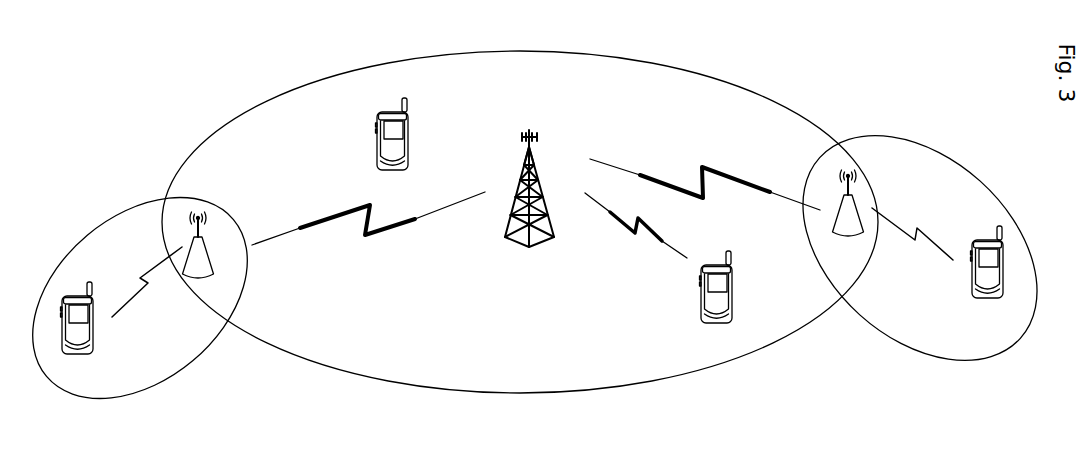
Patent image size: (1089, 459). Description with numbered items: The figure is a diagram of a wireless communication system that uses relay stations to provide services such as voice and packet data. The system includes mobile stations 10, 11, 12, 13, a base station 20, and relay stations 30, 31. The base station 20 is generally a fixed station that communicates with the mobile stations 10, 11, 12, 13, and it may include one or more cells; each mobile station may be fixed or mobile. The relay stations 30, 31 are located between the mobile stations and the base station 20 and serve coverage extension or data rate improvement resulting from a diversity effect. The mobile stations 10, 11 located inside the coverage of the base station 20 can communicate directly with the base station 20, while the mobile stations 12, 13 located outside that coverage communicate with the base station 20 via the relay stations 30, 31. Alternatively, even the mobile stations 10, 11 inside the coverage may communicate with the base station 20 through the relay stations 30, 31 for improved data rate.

The mobile station 10 is at (376, 151).
The mobile station 11 is at (733, 284).
The mobile station 12 is at (94, 329).
The mobile station 13 is at (972, 272).
The base station 20 is at (535, 158).
The relay station 30 is at (207, 246).
The relay station 31 is at (857, 202).